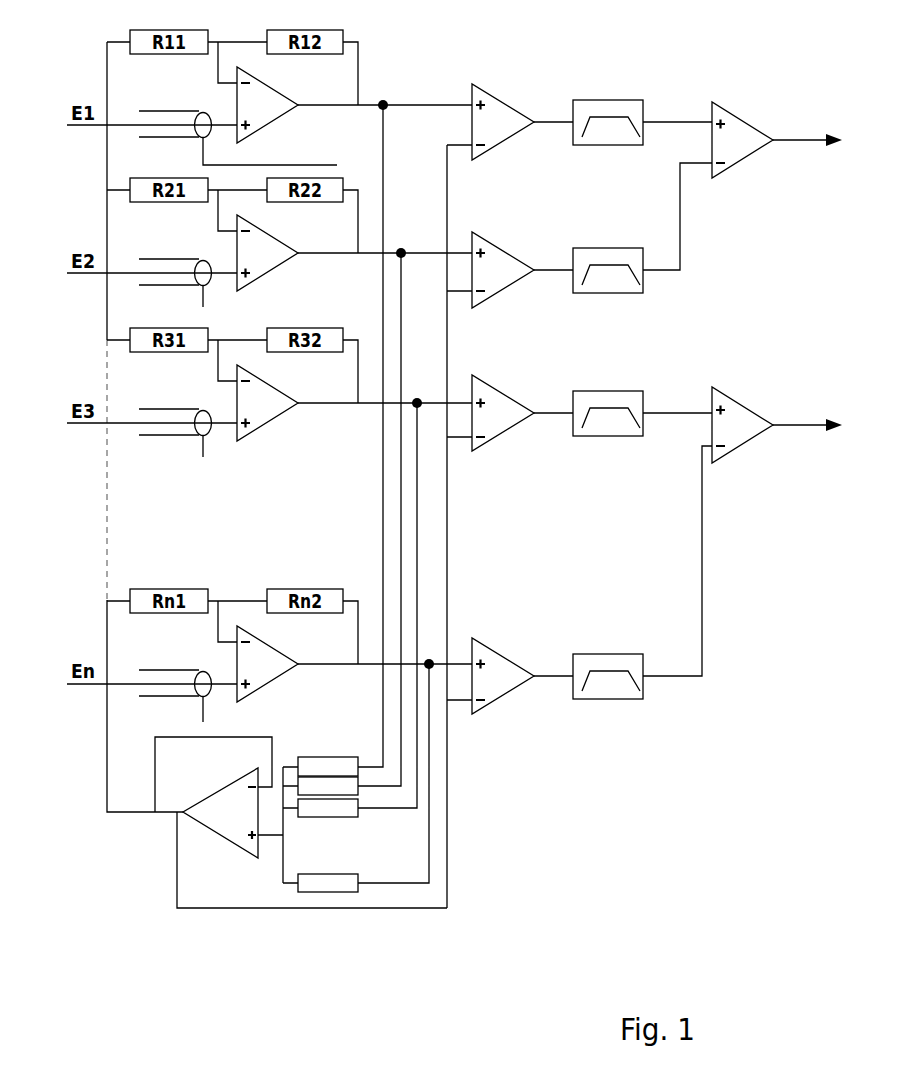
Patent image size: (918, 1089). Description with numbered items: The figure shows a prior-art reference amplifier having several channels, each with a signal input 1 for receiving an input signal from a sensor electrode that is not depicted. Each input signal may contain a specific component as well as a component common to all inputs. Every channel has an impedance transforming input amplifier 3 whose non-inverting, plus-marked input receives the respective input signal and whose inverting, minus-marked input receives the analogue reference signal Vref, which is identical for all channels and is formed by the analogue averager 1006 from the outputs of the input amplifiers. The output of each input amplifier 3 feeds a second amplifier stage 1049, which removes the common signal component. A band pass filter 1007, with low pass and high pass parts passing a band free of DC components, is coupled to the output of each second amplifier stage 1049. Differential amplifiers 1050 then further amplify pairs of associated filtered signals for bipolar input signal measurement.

The signal input 1 is at (75, 456).
The impedance transforming input amplifier 3 is at (307, 426).
The second amplifier stage 1049 is at (494, 82).
The band pass filter 1007 is at (636, 89).
The differential amplifier 1050 is at (748, 454).
The analogue averager 1006 is at (144, 891).